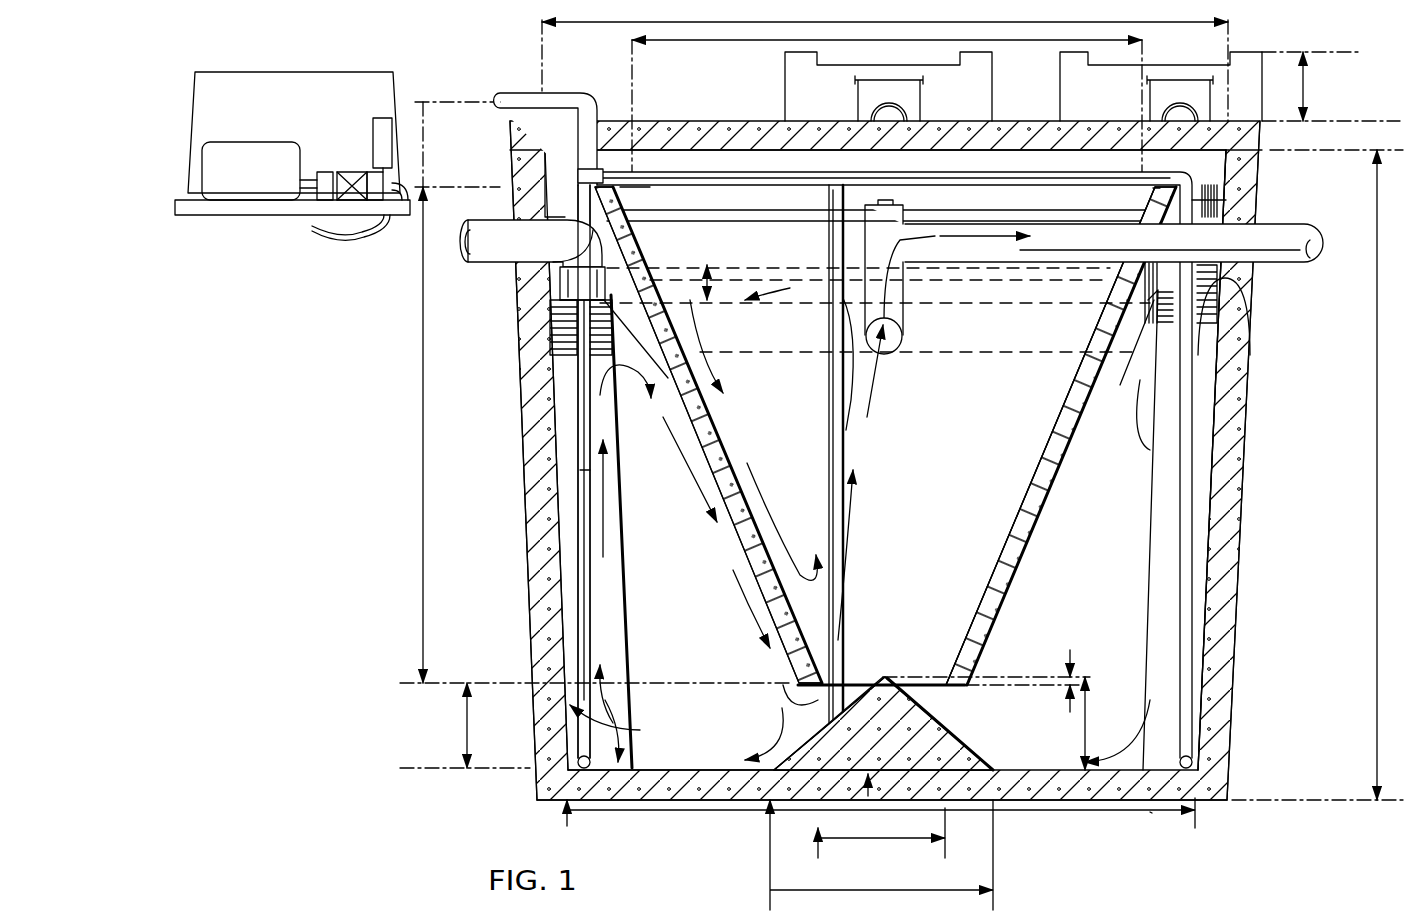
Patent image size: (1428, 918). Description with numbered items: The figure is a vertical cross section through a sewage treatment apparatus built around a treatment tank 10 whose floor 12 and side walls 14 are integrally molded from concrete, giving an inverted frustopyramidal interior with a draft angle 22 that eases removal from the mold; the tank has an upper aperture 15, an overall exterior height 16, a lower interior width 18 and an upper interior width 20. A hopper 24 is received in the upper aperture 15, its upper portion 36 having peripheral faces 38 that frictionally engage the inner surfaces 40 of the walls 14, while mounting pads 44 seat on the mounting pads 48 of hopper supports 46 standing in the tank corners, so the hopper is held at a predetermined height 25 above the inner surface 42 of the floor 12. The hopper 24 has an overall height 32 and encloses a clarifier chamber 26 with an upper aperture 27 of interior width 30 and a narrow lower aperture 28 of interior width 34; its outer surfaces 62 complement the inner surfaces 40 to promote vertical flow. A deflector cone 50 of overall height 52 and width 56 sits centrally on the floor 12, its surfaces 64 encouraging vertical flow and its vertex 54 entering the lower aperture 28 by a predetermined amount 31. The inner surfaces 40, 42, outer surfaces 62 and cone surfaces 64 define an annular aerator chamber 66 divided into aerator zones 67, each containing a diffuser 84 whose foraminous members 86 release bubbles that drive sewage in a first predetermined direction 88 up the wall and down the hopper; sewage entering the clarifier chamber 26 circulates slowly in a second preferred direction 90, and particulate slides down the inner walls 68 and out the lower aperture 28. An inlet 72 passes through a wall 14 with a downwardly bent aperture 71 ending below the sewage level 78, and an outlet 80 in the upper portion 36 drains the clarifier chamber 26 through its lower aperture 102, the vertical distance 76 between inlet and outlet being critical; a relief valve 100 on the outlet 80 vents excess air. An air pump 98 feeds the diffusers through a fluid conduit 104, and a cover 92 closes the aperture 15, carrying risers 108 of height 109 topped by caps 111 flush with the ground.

The treatment tank 10 is at (500, 515).
The floor 12 is at (718, 800).
The side walls 14 is at (530, 598).
The upper aperture 15 is at (1245, 160).
The overall exterior height 16 is at (1377, 600).
The lower interior width 18 is at (1150, 812).
The upper interior width 20 is at (602, 25).
The draft angle 22 is at (628, 735).
The hopper 24 is at (1025, 580).
The predetermined height 25 is at (462, 722).
The clarifier chamber 26 is at (913, 486).
The upper aperture 27 is at (640, 214).
The lower aperture 28 is at (948, 688).
The upper aperture interior width 30 is at (765, 42).
The predetermined amount 31 is at (1068, 650).
The overall height 32 is at (423, 500).
The lower aperture interior width 34 is at (888, 842).
The upper portion 36 is at (1285, 262).
The peripheral faces 38 is at (1250, 210).
The inner surfaces 40 is at (1150, 590).
The inner surface 42 is at (675, 768).
The mounting pads 44 is at (1238, 372).
The hopper supports 46 is at (630, 618).
The mounting pads 48 is at (1212, 345).
The deflector cone 50 is at (938, 677).
The overall height 52 is at (1090, 730).
The vertex 54 is at (890, 677).
The width 56 is at (932, 890).
The outer surfaces 62 is at (1035, 540).
The surfaces 64 is at (990, 753).
The annular aerator chamber 66 is at (1213, 500).
The aerator zones 67 is at (658, 569).
The inner walls 68 is at (1003, 560).
The aperture 71 is at (560, 330).
The inlet 72 is at (500, 262).
The distance 76 is at (740, 285).
The sewage level 78 is at (710, 265).
The outlet 80 is at (985, 280).
The diffusers 84 is at (875, 800).
The foraminous members 86 is at (905, 745).
The first predetermined direction 88 is at (612, 508).
The second preferred direction 90 is at (832, 372).
The cover 92 is at (678, 121).
The air pump 98 is at (406, 98).
The relief valve 100 is at (912, 182).
The lower aperture 102 is at (898, 352).
The fluid conduit 104 is at (595, 648).
The risers 108 is at (1062, 95).
The height 109 is at (1310, 85).
The cap 111 is at (1240, 52).